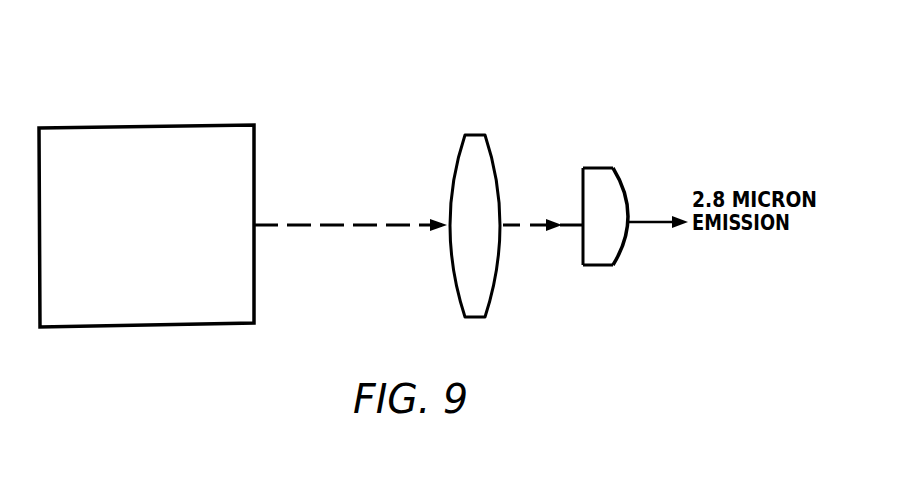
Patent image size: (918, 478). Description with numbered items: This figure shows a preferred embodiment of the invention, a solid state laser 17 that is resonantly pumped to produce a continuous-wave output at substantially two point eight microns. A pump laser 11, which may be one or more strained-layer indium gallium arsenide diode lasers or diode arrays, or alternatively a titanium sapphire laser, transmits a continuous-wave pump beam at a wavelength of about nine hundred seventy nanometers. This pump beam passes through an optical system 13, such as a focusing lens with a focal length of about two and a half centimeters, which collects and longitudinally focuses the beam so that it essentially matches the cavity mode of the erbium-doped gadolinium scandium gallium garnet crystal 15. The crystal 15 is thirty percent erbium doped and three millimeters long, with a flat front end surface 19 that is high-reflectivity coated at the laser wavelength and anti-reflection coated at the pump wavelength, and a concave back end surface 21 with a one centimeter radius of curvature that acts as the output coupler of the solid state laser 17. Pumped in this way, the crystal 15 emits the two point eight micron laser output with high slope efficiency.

The pump laser 11 is at (185, 128).
The optical system 13 is at (458, 162).
The Er3+:GSGG crystal 15 is at (598, 225).
The solid state laser 17 is at (489, 73).
The front end surface 19 is at (583, 190).
The back end surface 21 is at (623, 183).